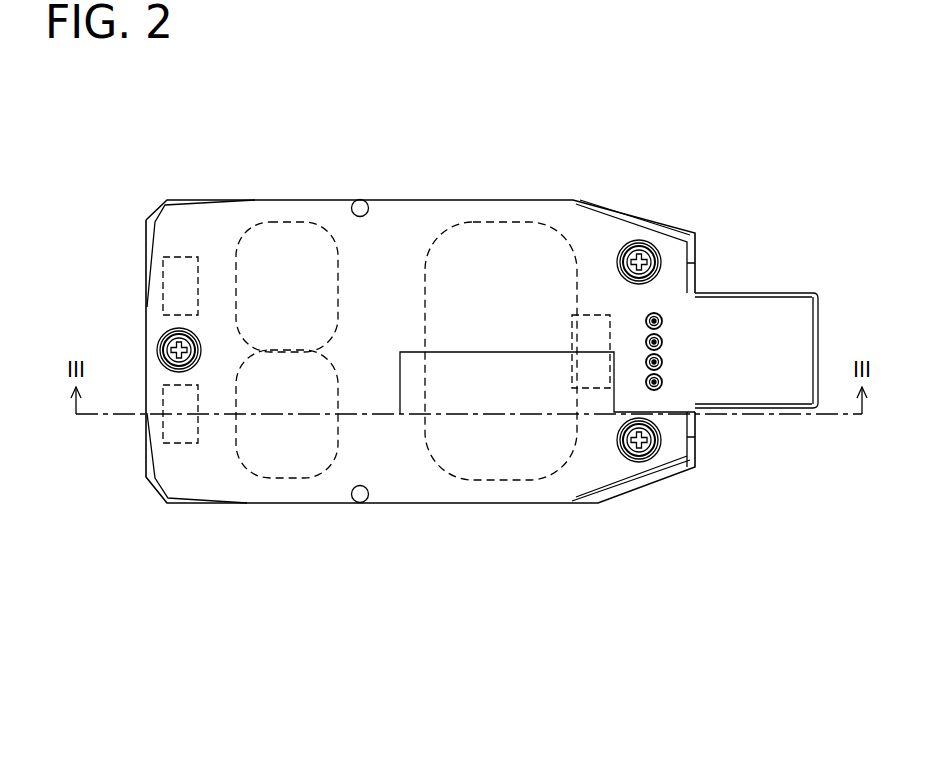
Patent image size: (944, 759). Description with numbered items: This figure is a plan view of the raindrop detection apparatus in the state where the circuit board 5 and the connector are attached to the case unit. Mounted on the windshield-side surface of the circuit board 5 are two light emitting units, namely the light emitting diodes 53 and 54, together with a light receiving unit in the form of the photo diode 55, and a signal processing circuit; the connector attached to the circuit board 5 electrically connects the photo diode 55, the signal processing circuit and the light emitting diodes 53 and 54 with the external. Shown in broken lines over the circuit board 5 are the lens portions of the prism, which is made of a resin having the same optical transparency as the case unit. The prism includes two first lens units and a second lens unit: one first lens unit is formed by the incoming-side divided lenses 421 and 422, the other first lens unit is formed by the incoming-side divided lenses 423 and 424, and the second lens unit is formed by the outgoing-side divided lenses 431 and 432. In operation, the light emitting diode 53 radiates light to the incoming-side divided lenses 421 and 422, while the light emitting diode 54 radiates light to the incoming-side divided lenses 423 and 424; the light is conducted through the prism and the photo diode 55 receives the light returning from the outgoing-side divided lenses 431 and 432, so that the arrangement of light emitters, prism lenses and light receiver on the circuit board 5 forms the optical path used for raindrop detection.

The circuit board 5 is at (441, 198).
The light emitting unit 53 is at (180, 444).
The light emitting unit 54 is at (178, 255).
The light receiving unit 55 is at (593, 314).
The incoming-side divided lens 421 is at (288, 473).
The incoming-side divided lens 422 is at (285, 479).
The incoming-side divided lens 423 is at (287, 226).
The incoming-side divided lens 424 is at (290, 221).
The outgoing-side divided lens 431 is at (501, 290).
The outgoing-side divided lens 432 is at (522, 221).